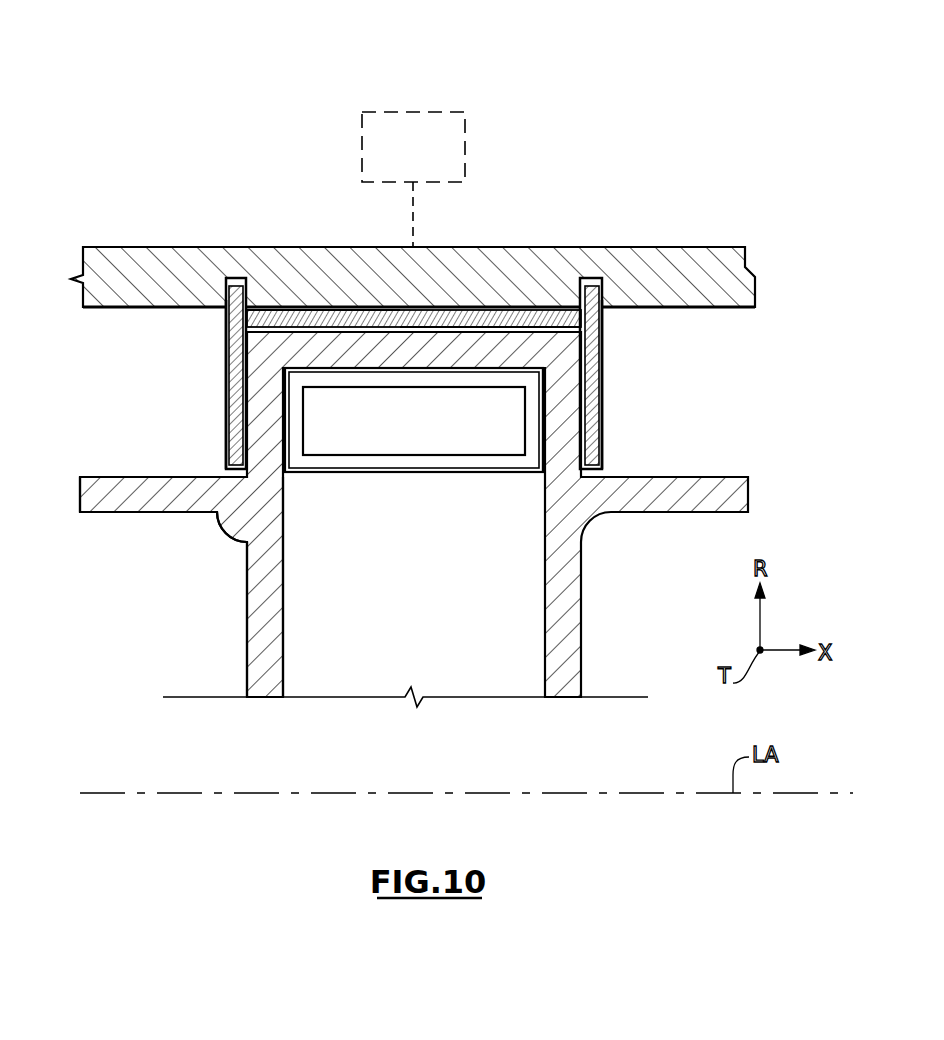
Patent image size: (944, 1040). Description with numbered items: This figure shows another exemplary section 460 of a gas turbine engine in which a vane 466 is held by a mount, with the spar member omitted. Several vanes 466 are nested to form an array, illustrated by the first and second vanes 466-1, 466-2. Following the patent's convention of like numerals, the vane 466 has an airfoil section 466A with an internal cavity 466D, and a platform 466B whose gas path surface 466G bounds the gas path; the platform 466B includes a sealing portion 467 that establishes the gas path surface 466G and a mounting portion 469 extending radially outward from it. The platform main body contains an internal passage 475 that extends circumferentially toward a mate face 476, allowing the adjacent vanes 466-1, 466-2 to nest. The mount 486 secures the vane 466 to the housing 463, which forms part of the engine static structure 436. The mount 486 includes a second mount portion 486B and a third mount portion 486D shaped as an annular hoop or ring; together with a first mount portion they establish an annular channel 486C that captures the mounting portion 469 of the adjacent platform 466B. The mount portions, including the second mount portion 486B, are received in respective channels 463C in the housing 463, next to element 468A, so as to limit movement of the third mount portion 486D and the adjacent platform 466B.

The section 460 is at (120, 64).
The engine static structure 436 is at (394, 159).
The housing 463 is at (697, 247).
The channel 463C is at (231, 278).
The vane 466 is at (409, 514).
The first vane 466-1 is at (76, 470).
The second vane 466-2 is at (552, 408).
The airfoil section 466A is at (247, 647).
The first platform 466B is at (80, 514).
The internal cavity 466D is at (287, 675).
The gas path surface 466G is at (172, 505).
The sealing portion 467 is at (130, 483).
The slot wall 468A is at (226, 348).
The mounting portion 469 is at (253, 383).
The internal passage 475 is at (541, 449).
The first mate face 476 is at (537, 396).
The mount 486 is at (508, 300).
The second mount portion 486B is at (602, 352).
The annular channel 486C is at (414, 326).
The third mount portion 486D is at (308, 310).